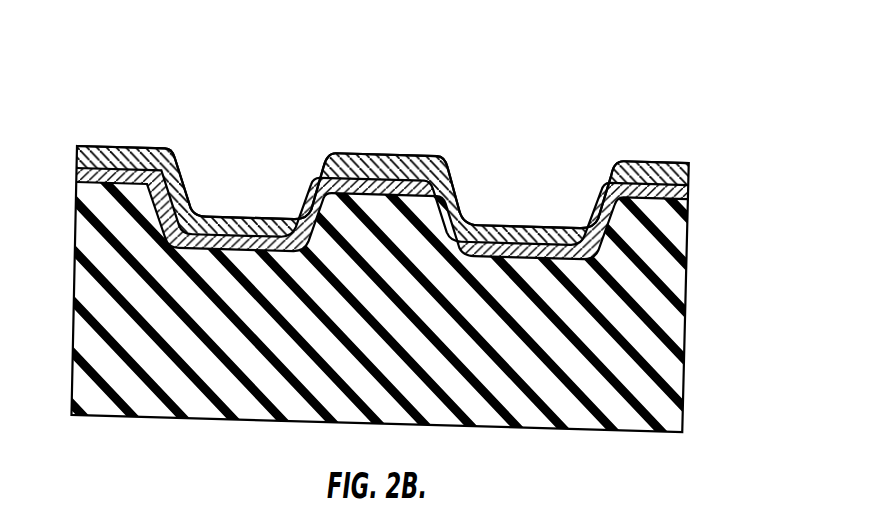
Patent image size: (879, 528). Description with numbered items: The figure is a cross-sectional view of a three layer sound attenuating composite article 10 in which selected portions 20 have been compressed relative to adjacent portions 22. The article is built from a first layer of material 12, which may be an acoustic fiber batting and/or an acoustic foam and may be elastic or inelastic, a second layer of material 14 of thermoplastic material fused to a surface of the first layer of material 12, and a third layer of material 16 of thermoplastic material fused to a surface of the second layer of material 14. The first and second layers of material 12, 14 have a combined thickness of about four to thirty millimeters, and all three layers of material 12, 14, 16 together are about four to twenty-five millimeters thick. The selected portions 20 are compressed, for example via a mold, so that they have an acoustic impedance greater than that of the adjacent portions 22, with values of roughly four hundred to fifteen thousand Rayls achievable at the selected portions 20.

The sound attenuating composite article 10 is at (433, 105).
The first layer of material 12 is at (692, 265).
The second layer of material 14 is at (692, 193).
The third layer of material 16 is at (690, 170).
The selected portions 20 is at (272, 178).
The adjacent portions 22 is at (119, 146).